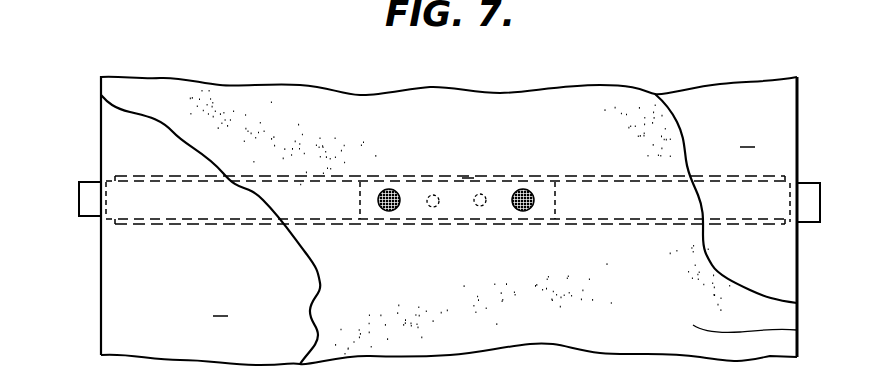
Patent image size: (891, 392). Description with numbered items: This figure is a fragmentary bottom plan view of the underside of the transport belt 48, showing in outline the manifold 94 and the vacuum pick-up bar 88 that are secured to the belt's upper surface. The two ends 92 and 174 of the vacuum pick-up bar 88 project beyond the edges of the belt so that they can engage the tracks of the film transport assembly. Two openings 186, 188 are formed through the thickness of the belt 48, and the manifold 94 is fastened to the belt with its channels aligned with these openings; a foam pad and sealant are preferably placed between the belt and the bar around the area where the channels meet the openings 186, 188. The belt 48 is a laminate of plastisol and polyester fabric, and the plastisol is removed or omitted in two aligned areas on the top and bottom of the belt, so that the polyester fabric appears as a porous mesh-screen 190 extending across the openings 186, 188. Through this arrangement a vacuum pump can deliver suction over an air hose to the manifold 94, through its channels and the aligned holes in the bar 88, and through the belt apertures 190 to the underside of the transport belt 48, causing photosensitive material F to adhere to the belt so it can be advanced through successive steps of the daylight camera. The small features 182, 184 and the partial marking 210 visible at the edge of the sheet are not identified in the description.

The transport belt 48 is at (797, 330).
The vacuum pick-up bar 88 is at (632, 193).
The end of vacuum pick-up bar 92 is at (79, 198).
The end of vacuum pick-up bar 174 is at (812, 200).
The manifold 94 is at (468, 178).
The porous mesh-screen 190 is at (389, 190).
The opening 186 is at (386, 211).
The opening 188 is at (524, 211).
The first aperture 184 is at (431, 208).
The second aperture 182 is at (483, 207).
The adjacent figure element 210 is at (5, 0).